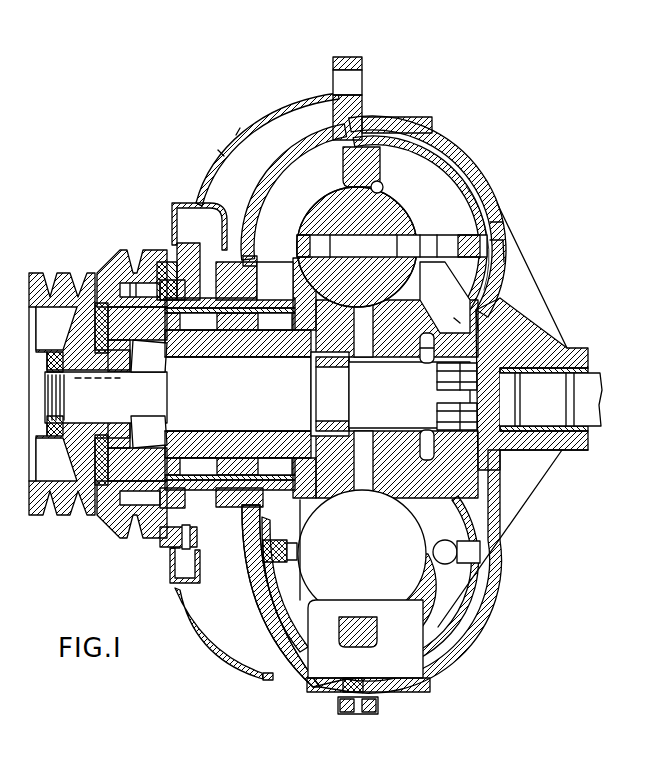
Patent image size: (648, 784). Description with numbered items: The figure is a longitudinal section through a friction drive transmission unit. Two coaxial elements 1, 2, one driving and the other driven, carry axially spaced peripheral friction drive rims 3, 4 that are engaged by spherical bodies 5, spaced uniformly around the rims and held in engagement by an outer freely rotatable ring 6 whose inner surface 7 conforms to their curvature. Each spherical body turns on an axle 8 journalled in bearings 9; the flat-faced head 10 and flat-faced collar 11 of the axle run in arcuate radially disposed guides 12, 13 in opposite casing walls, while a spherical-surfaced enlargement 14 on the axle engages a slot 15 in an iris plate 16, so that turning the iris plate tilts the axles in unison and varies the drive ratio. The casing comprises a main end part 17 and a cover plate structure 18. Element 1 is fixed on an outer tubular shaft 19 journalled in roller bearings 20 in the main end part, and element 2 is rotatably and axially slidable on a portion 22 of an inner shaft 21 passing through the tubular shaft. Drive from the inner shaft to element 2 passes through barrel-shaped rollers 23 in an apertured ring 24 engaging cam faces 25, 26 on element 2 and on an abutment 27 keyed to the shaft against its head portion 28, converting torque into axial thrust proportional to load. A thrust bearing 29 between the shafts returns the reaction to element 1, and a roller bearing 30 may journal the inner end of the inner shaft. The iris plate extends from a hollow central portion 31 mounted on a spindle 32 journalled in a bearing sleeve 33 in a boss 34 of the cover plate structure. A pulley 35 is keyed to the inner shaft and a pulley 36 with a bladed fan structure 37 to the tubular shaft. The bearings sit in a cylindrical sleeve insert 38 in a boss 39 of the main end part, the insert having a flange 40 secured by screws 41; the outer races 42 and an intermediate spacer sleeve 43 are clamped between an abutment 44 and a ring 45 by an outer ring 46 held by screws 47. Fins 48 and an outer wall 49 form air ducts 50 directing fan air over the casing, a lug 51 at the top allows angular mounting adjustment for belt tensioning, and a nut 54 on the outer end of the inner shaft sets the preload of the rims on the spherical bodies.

The coaxial element 1 is at (312, 327).
The coaxial element 2 is at (403, 334).
The friction drive rim 3 is at (292, 298).
The friction drive rim 4 is at (457, 265).
The spherical bodies 5 is at (327, 200).
The outer freely rotatable ring 6 is at (367, 147).
The inner surface 7 is at (379, 182).
The axle 8 is at (373, 252).
The bearings 9 is at (270, 220).
The flat-faced head 10 is at (257, 247).
The flat-faced collar 11 is at (497, 230).
The arcuate radially disposed guide 12 is at (316, 140).
The arcuate radially disposed guide 13 is at (443, 162).
The spherical-surfaced enlargement 14 is at (500, 240).
The slot 15 is at (462, 232).
The iris plate 16 is at (443, 163).
The main end part 17 is at (276, 157).
The cover plate structure 18 is at (505, 258).
The outer tubular shaft 19 is at (236, 343).
The roller bearings 20 is at (256, 443).
The inner shaft 21 is at (229, 402).
The shaft portion 22 is at (386, 389).
The barrel-shaped rollers 23 is at (433, 352).
The apertured ring 24 is at (430, 356).
The cam face 25 is at (411, 455).
The cam face 26 is at (445, 419).
The abutment 27 is at (478, 326).
The head portion 28 is at (518, 346).
The thrust bearing 29 is at (142, 420).
The roller bearing 30 is at (331, 430).
The hollow central portion 31 is at (514, 366).
The spindle 32 is at (558, 395).
The bearing sleeve 33 is at (534, 447).
The boss 34 is at (537, 452).
The pulley 35 is at (52, 271).
The pulley 36 is at (130, 249).
The bladed fan structure 37 is at (180, 207).
The cylindrical sleeve insert 38 is at (188, 290).
The boss 39 is at (186, 262).
The flange 40 is at (143, 548).
The screws 41 is at (162, 554).
The outer races 42 is at (254, 303).
The intermediate spacer sleeve 43 is at (211, 379).
The abutment 44 is at (305, 330).
The ring 45 is at (165, 350).
The outer ring 46 is at (120, 253).
The screws 47 is at (157, 288).
The fins 48 is at (248, 150).
The outer wall 49 is at (226, 152).
The air ducts 50 is at (281, 130).
The lug 51 is at (348, 57).
The nut 54 is at (55, 353).